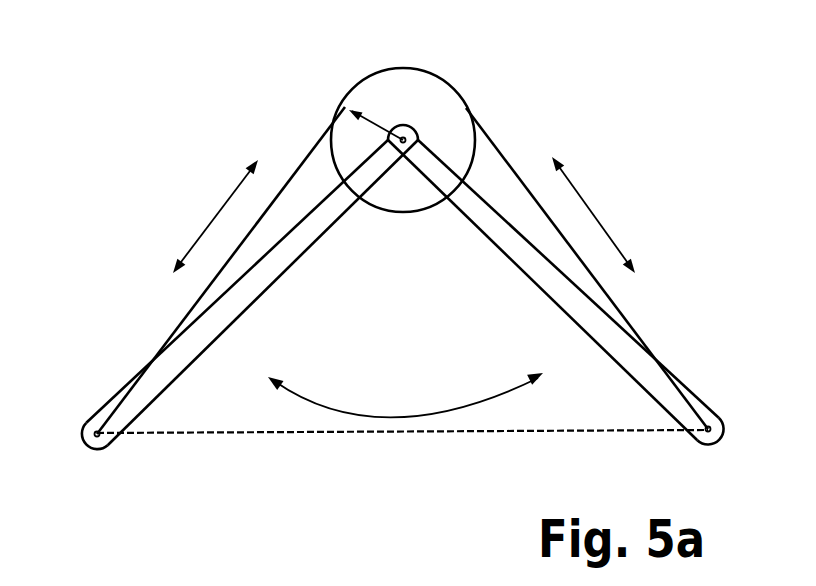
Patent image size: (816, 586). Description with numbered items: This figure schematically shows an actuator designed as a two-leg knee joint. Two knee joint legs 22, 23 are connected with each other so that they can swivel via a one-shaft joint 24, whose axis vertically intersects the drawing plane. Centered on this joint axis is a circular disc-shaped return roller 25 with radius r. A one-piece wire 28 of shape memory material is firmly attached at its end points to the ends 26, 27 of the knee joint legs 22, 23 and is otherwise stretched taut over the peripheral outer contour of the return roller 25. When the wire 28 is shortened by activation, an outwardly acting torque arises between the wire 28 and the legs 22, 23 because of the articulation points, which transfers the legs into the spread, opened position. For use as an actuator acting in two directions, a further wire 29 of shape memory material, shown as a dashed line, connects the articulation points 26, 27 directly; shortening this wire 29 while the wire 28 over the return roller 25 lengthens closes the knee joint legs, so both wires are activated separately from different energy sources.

The knee joint leg 22 is at (203, 338).
The knee joint leg 23 is at (605, 337).
The one-shaft joint 24 is at (404, 137).
The return roller 25 is at (426, 96).
The end of knee joint leg 26 is at (90, 428).
The end of knee joint leg 27 is at (718, 423).
The wire of shape memory material 28 is at (503, 150).
The further wire of shape memory material 29 is at (377, 432).